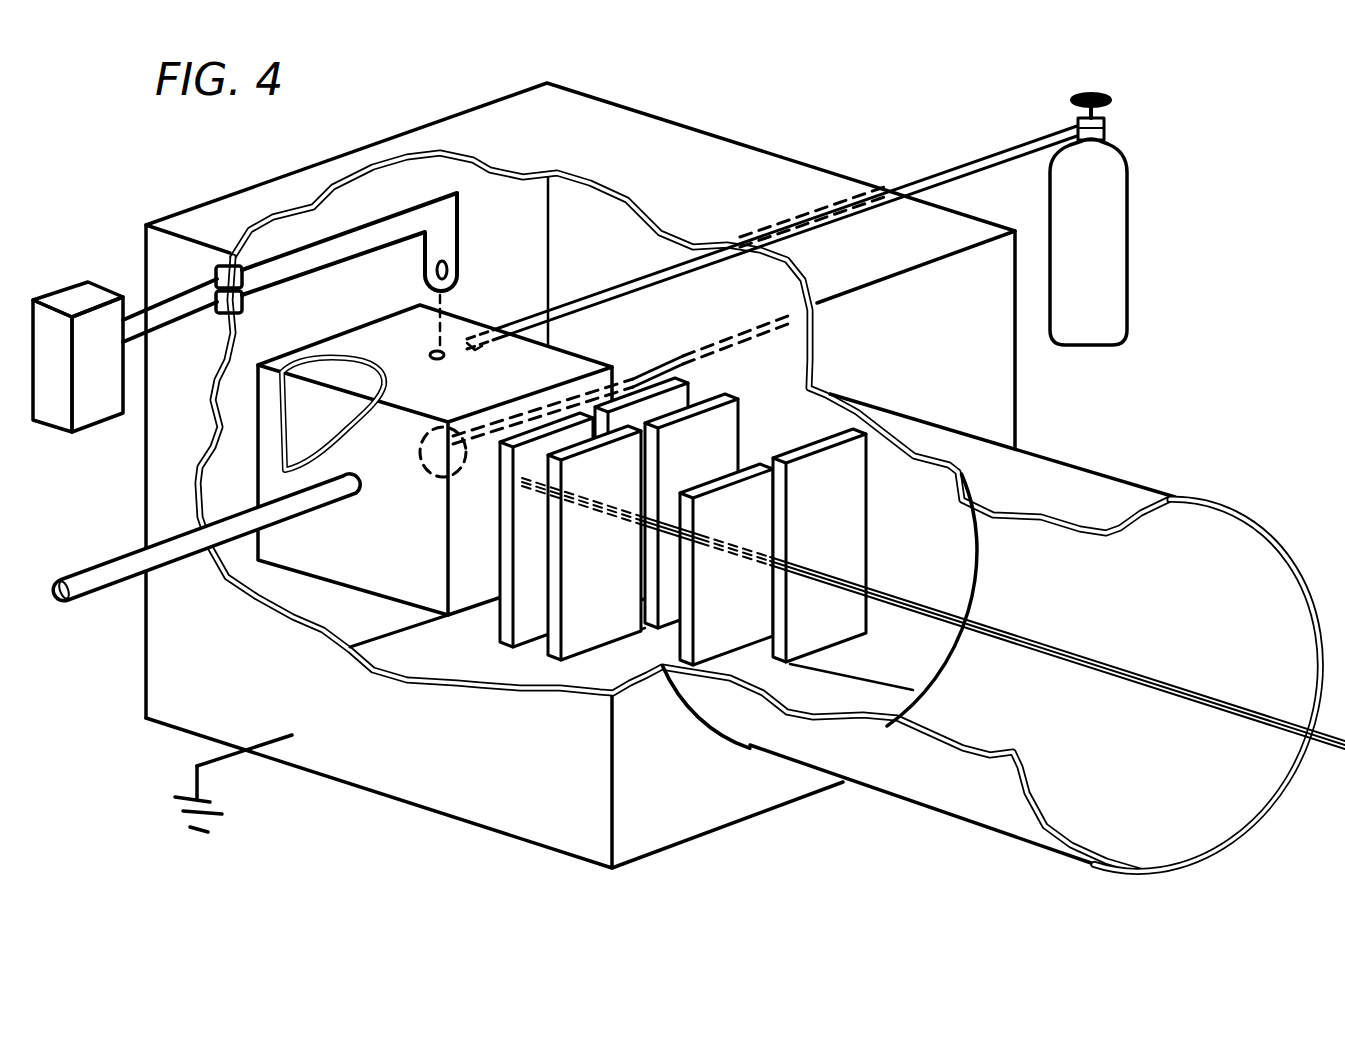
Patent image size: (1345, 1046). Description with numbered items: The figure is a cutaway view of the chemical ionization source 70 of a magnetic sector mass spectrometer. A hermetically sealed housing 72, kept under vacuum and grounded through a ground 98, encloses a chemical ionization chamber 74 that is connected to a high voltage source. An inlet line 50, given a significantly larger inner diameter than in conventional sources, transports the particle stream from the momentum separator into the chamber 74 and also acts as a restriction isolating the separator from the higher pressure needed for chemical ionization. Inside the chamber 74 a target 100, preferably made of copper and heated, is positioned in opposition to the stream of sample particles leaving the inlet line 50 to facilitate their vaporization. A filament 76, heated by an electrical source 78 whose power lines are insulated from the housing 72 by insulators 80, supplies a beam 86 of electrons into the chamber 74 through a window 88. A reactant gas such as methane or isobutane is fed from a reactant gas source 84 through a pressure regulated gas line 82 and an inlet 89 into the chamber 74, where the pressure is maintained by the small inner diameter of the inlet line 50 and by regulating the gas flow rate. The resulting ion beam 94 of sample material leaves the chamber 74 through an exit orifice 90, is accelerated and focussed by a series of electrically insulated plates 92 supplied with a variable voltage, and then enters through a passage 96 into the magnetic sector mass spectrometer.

The inlet line 50 is at (103, 560).
The chemical ionization source 70 is at (908, 104).
The hermetically sealed housing 72 is at (680, 122).
The chemical ionization chamber 74 is at (330, 332).
The filament 76 is at (458, 232).
The electrical source 78 is at (95, 287).
The insulators 80 is at (238, 305).
The pressure regulated gas line 82 is at (592, 292).
The reactant gas source 84 is at (1124, 250).
The beam of electrons 86 is at (443, 296).
The window 88 is at (445, 359).
The inlet 89 is at (472, 347).
The exit orifice 90 is at (527, 488).
The plates 92 is at (700, 377).
The ion beam 94 is at (1080, 649).
The passage 96 is at (1071, 456).
The ground 98 is at (197, 778).
The target 100 is at (427, 468).